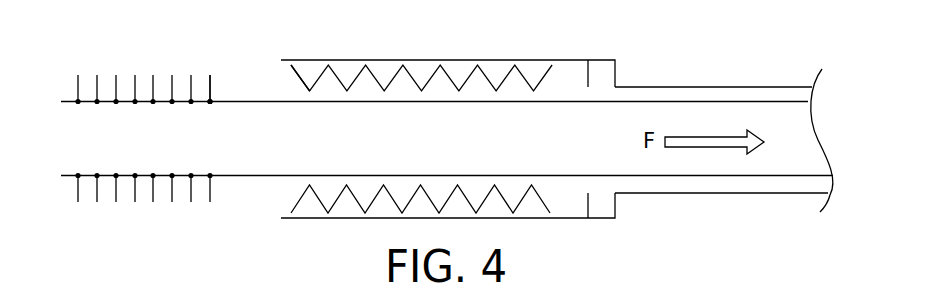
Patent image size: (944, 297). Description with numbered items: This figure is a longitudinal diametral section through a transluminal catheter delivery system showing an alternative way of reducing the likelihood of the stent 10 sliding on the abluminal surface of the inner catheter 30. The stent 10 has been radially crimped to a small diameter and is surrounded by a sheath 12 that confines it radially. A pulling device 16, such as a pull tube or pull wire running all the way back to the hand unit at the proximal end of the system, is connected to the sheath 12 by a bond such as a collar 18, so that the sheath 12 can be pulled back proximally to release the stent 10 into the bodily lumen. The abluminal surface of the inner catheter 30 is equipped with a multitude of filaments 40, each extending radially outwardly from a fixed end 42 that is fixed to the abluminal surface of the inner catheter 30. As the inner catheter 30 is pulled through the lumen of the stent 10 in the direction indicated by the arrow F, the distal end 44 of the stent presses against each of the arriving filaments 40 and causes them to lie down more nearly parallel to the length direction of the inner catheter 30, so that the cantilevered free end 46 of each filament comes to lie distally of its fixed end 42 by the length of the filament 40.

The stent 10 is at (505, 78).
The sheath 12 is at (558, 60).
The pulling device 16 is at (748, 88).
The collar 18 is at (600, 60).
The inner catheter 30 is at (560, 103).
The filaments 40 is at (210, 87).
The fixed end 42 is at (210, 104).
The distal end of the stent 44 is at (300, 79).
The cantilevered free end 46 is at (210, 78).